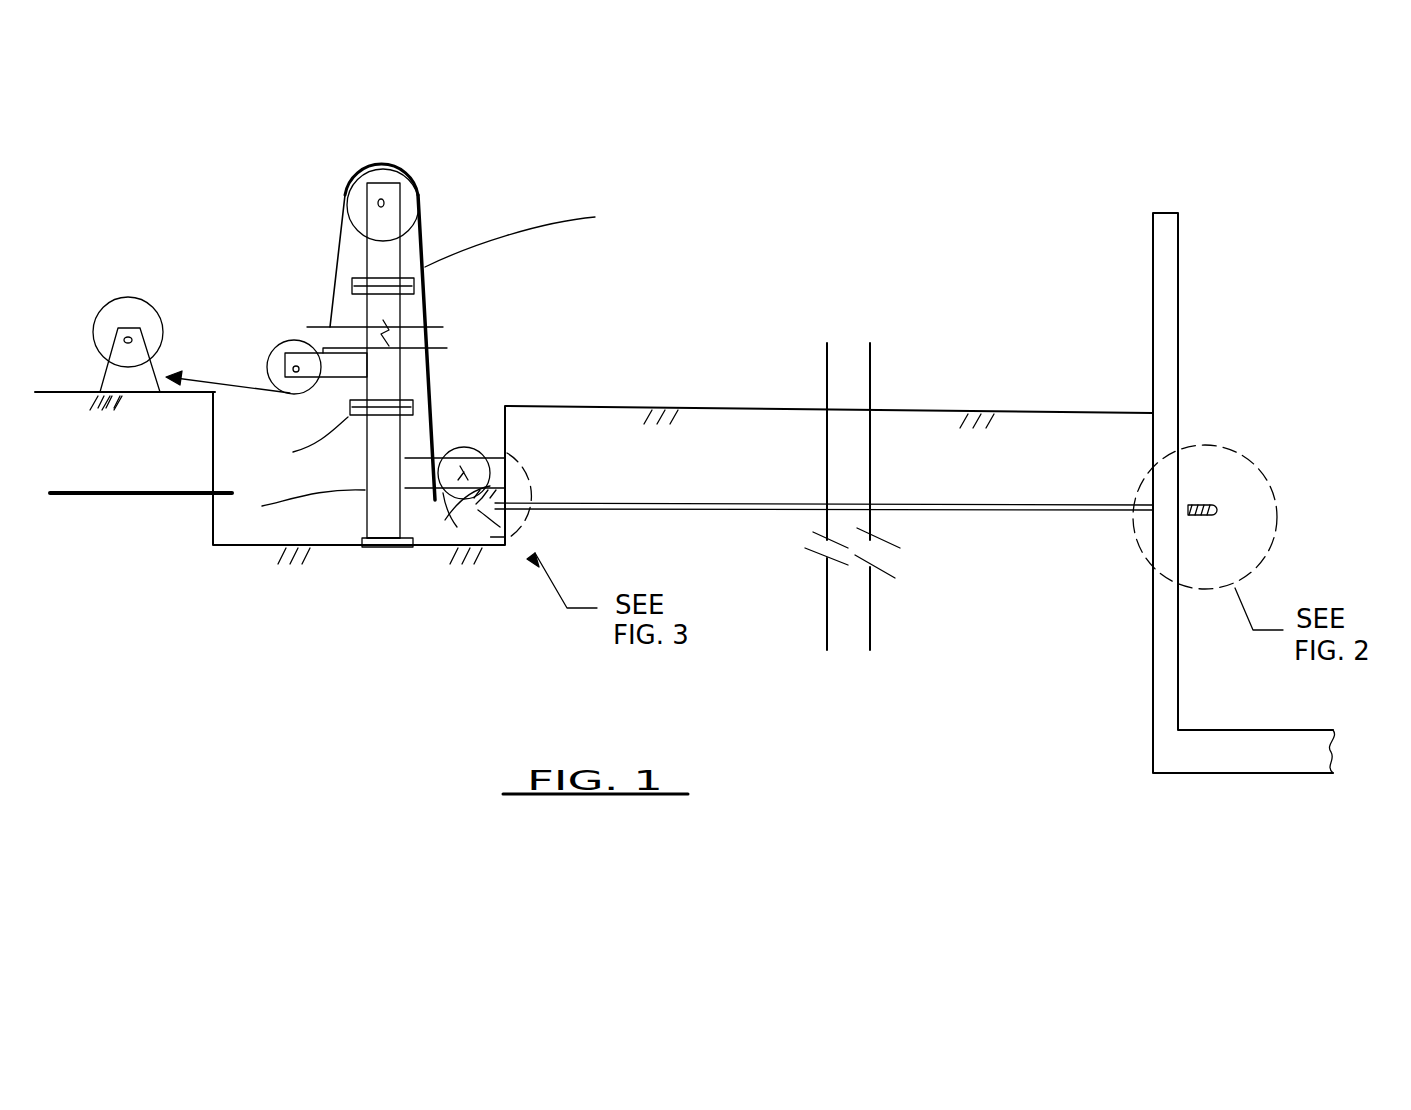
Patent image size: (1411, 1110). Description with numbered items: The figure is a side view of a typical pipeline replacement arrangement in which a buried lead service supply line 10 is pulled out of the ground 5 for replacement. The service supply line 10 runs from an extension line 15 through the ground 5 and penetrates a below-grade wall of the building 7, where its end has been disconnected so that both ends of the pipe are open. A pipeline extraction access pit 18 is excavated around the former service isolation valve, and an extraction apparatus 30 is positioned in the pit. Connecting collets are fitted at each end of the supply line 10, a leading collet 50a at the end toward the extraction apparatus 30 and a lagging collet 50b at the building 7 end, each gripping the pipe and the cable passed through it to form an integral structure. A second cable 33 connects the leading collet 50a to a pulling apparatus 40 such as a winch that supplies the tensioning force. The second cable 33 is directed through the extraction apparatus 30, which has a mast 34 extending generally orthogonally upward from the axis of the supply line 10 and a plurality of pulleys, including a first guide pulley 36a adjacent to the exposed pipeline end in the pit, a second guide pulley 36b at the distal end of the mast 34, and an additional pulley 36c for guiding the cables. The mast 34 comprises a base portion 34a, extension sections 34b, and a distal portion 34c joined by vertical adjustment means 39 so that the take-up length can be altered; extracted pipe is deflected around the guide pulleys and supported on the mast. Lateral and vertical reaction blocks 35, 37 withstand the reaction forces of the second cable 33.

The ground 5 is at (1030, 432).
The building 7 is at (1185, 345).
The service supply line 10 is at (975, 512).
The extension line 15 is at (128, 496).
The pipeline extraction access pit 18 is at (160, 462).
The extraction apparatus 30 is at (470, 280).
The second cable 33 is at (442, 388).
The mast 34 is at (348, 458).
The base portion 34a is at (292, 511).
The extension sections 34b is at (342, 393).
The distal portion 34c is at (430, 245).
The lateral reaction block 35 is at (492, 452).
The first guide pulley 36a is at (468, 448).
The second guide pulley 36b is at (408, 183).
The additional pulley 36c is at (286, 347).
The vertical reaction block 37 is at (358, 537).
The vertical adjustment means 39 is at (438, 337).
The pulling apparatus 40 is at (168, 293).
The leading collet 50a is at (558, 534).
The lagging collet 50b is at (1268, 475).